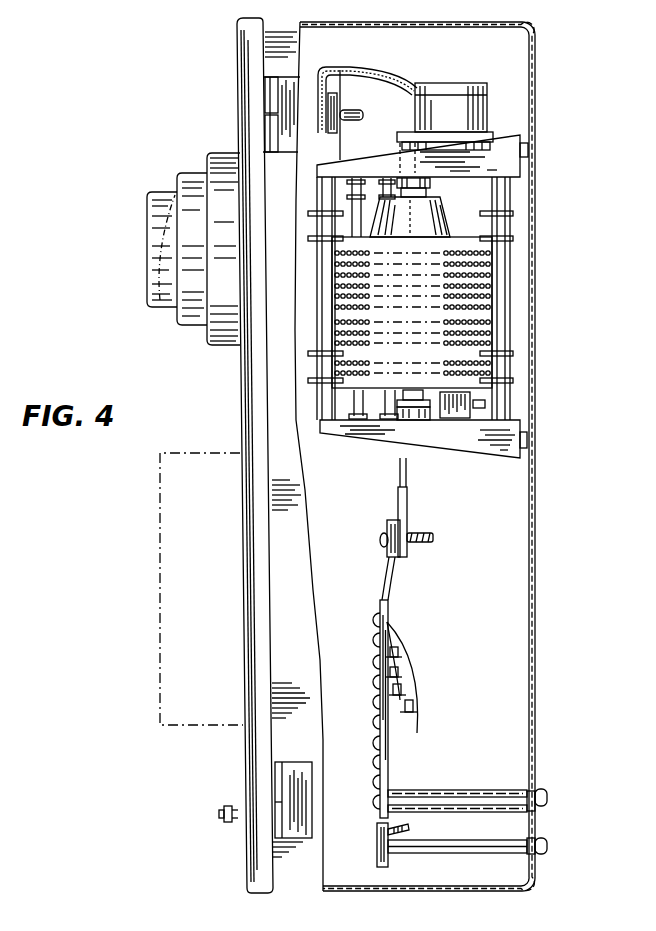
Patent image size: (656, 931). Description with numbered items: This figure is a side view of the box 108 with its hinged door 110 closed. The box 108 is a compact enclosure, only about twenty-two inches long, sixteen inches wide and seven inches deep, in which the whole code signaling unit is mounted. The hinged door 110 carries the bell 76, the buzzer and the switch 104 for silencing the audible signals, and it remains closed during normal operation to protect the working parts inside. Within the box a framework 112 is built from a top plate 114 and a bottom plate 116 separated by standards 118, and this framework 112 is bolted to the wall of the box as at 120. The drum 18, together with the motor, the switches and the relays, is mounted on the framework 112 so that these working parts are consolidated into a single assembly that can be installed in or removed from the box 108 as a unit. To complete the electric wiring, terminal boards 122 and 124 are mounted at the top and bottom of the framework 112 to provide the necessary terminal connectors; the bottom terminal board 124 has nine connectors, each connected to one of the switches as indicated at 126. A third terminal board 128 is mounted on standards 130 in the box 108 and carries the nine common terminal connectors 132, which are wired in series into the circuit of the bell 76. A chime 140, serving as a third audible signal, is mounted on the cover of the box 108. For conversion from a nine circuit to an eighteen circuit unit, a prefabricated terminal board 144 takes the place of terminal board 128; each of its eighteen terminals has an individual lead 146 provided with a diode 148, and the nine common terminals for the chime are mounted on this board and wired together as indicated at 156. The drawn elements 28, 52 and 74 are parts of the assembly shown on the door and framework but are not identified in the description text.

The drum 18 is at (466, 241).
The cylinder / connector 28 is at (484, 90).
The base block 52 is at (463, 406).
The knob 74 is at (150, 232).
The bell 76 is at (200, 327).
The switch 104 is at (222, 816).
The box 108 is at (533, 620).
The hinged door 110 is at (240, 101).
The framework 112 is at (446, 272).
The top plate 114 is at (501, 170).
The bottom plate 116 is at (405, 410).
The standards 118 is at (503, 328).
The bolted attachment 120 is at (511, 140).
The terminal board 122 is at (325, 127).
The bottom terminal board 124 is at (394, 524).
The connection 126 is at (376, 549).
The third terminal board 128 is at (388, 857).
The standards 130 is at (493, 841).
The common terminal connectors 132 is at (362, 843).
The chime 140 is at (170, 593).
The prefabricated terminal board 144 is at (389, 758).
The lead 146 is at (408, 705).
The diode 148 is at (400, 672).
The chime common terminal wiring 156 is at (370, 768).